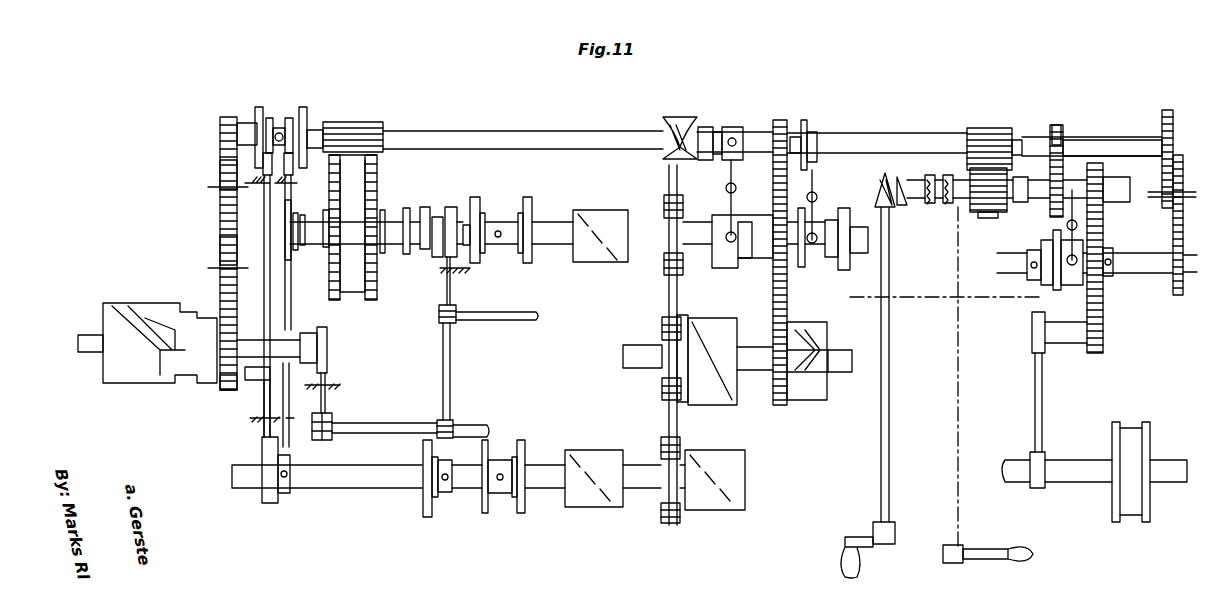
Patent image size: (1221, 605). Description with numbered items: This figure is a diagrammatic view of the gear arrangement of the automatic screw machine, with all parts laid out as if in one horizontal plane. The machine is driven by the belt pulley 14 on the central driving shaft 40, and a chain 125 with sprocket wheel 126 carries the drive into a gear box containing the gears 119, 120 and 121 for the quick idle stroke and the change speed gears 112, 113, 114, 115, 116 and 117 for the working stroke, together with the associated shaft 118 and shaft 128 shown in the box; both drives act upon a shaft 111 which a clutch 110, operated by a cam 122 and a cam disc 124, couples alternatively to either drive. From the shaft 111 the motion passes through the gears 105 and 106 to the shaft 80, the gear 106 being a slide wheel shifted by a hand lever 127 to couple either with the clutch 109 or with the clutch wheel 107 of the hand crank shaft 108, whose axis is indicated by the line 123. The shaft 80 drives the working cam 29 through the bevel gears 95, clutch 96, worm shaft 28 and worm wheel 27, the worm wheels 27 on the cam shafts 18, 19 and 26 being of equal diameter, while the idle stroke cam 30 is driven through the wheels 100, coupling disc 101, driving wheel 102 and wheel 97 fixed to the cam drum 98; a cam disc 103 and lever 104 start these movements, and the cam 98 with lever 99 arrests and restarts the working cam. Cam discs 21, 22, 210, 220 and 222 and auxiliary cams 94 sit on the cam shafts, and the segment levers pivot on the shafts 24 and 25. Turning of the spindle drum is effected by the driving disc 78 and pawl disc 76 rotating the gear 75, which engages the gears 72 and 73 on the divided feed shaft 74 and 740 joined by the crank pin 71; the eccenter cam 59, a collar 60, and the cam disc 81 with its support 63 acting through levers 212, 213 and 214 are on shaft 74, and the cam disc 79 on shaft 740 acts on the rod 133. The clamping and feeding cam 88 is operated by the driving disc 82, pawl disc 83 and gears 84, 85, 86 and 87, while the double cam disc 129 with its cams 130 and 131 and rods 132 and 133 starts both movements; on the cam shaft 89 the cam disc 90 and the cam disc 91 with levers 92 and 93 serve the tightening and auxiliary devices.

The belt pulley 14 is at (1130, 518).
The cam shaft 18 is at (352, 488).
The cam shaft 19 is at (545, 225).
The cam disc 21 is at (520, 513).
The cam disc 22 is at (528, 263).
The shaft 24 is at (394, 426).
The shaft 25 is at (487, 320).
The shaft 26 is at (756, 368).
The worm wheel 27 is at (664, 276).
The worm shaft 28 is at (669, 178).
The working cam 29 is at (715, 405).
The idle stroke cam 30 is at (797, 397).
The central driving shaft 40 is at (1070, 482).
The eccenter cam 59 is at (407, 208).
The collar 60 is at (425, 207).
The support 63 is at (438, 268).
The crank pin 71 is at (353, 292).
The gear 72 is at (329, 284).
The gear 73 is at (377, 270).
The feed shaft 74 is at (389, 213).
The gear 75 is at (350, 128).
The pawl disc 76 is at (305, 109).
The driving disc 78 is at (289, 118).
The cam disc 79 is at (286, 236).
The shaft 80 is at (470, 132).
The cam disc 81 is at (454, 207).
The driving disc 82 is at (269, 118).
The pawl disc 83 is at (257, 107).
The gear 84 is at (220, 124).
The gear 85 is at (222, 172).
The gear 86 is at (220, 247).
The gear 87 is at (218, 390).
The clamping and feeding cam 88 is at (121, 383).
The cam shaft 89 is at (85, 352).
The cam disc 90 is at (248, 380).
The cam disc 91 is at (327, 351).
The lever 92 is at (326, 402).
The lever 93 is at (332, 440).
The auxiliary cam 94 is at (597, 266).
The bevel gears 95 is at (670, 120).
The clutch 96 is at (718, 135).
The wheel 97 is at (774, 263).
The cam drum 98 is at (745, 215).
The lever 99 is at (727, 195).
The wheels 100 is at (782, 120).
The coupling disc 101 is at (805, 120).
The driving wheel 102 is at (817, 137).
The cam disc 103 is at (802, 267).
The lever 104 is at (814, 180).
The gear 105 is at (981, 129).
The gear 106 is at (988, 212).
The clutch wheel 107 is at (917, 198).
The hand crank shaft 108 is at (889, 442).
The clutch 109 is at (1020, 202).
The clutch 110 is at (1090, 163).
The shaft 111 is at (1117, 175).
The change speed gear 112 is at (1050, 170).
The change speed gear 113 is at (1057, 125).
The change speed gear 114 is at (1173, 120).
The change speed gear 115 is at (1157, 197).
The change speed gear 116 is at (1183, 170).
The change speed gear 117 is at (1182, 247).
The shaft 118 is at (1152, 273).
The gear 119 is at (1103, 295).
The gear 120 is at (1103, 345).
The gear 121 is at (1088, 204).
The cam 122 is at (1060, 280).
The axis line 123 is at (934, 301).
The cam disc 124 is at (843, 270).
The chain 125 is at (1034, 382).
The sprocket wheel 126 is at (1033, 488).
The hand lever 127 is at (973, 560).
The shaft 128 is at (1115, 140).
The double cam disc 129 is at (270, 503).
The cam 130 is at (262, 440).
The cam 131 is at (287, 445).
The rod 132 is at (265, 185).
The rod 133 is at (291, 190).
The cam disc 210 is at (427, 517).
The lever 212 is at (450, 372).
The lever 213 is at (439, 313).
The lever 214 is at (453, 423).
The cam disc 220 is at (483, 513).
The cam disc 222 is at (475, 263).
The feed shaft 740 is at (329, 270).